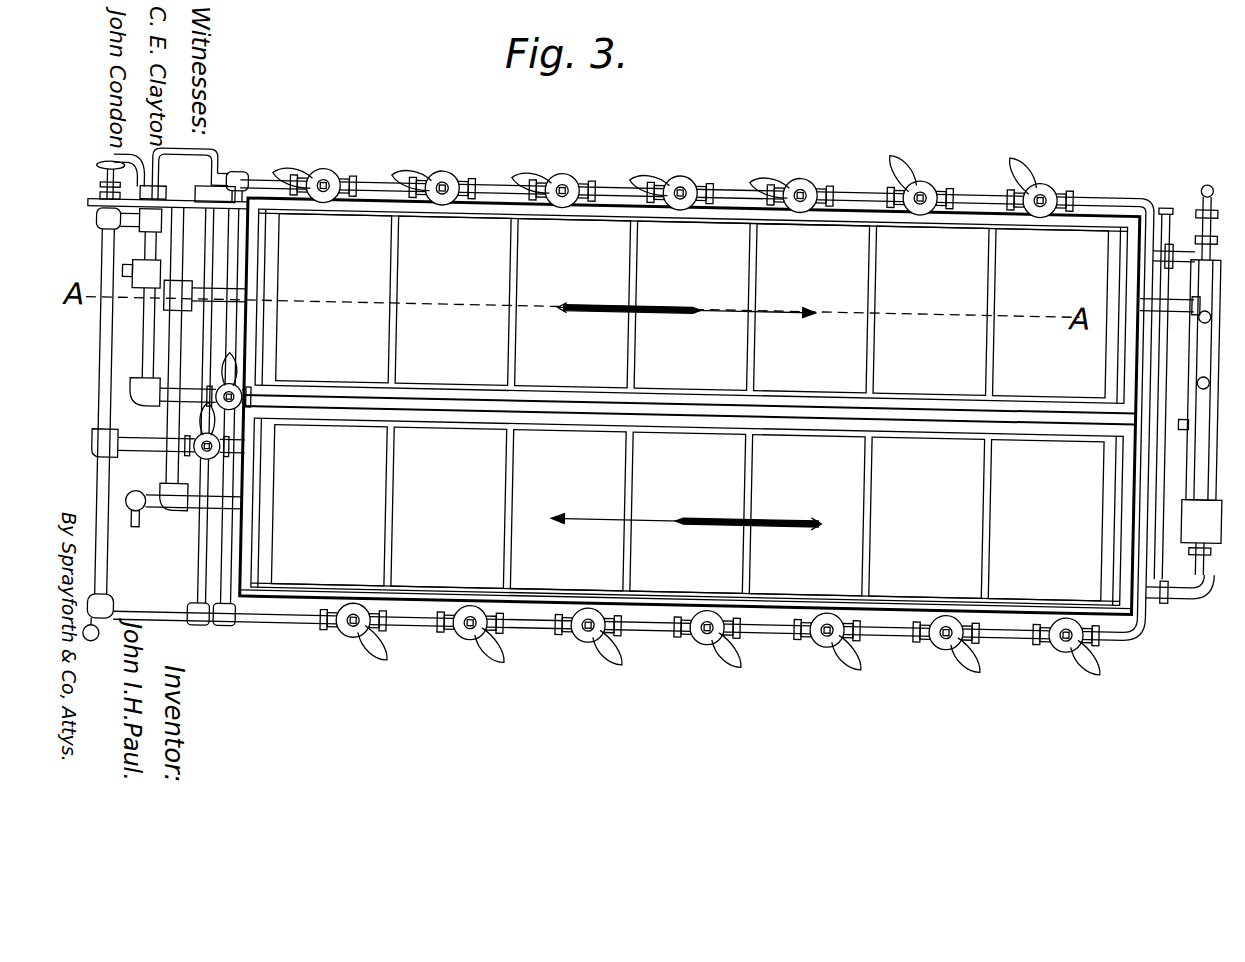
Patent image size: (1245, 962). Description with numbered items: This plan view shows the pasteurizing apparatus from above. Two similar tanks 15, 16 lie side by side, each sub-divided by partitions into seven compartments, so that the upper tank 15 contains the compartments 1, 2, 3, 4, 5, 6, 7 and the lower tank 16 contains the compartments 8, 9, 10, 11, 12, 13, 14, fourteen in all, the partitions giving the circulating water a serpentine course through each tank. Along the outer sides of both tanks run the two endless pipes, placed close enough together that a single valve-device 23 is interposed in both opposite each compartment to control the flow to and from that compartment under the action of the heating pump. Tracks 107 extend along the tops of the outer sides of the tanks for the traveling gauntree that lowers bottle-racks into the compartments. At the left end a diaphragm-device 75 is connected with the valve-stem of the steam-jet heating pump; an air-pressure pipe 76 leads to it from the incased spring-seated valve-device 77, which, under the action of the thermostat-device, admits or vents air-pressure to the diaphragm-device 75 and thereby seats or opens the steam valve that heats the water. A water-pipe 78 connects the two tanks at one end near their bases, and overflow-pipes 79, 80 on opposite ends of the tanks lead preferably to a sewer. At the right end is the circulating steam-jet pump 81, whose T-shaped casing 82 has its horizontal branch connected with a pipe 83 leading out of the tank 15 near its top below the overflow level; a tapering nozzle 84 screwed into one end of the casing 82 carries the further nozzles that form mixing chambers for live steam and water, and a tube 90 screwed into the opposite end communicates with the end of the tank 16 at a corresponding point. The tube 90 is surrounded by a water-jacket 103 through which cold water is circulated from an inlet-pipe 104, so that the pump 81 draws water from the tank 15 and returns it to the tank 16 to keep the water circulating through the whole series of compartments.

The compartment 1 is at (334, 298).
The compartment 2 is at (453, 300).
The compartment 3 is at (573, 303).
The compartment 4 is at (692, 305).
The compartment 5 is at (812, 308).
The compartment 6 is at (931, 310).
The compartment 7 is at (1051, 313).
The compartment 8 is at (1046, 520).
The compartment 9 is at (927, 517).
The compartment 10 is at (807, 515).
The compartment 11 is at (688, 512).
The compartment 12 is at (568, 510).
The compartment 13 is at (449, 507).
The compartment 14 is at (329, 505).
The tank 15 is at (1093, 211).
The tank 16 is at (1117, 597).
The valve-device 23 is at (327, 168).
The diaphragm-device 75 is at (100, 166).
The air-pressure pipe 76 is at (140, 164).
The incased spring-seated valve-device 77 is at (203, 188).
The water-pipe 78 is at (178, 364).
The overflow-pipe 79 is at (183, 510).
The overflow-pipe 80 is at (1169, 298).
The steam-jet pump 81 is at (1191, 472).
The T-shaped casing 82 is at (1201, 244).
The pipe 83 is at (1178, 227).
The tapering nozzle 84 is at (1213, 247).
The tube 90 is at (1202, 265).
The water-jacket 103 is at (1196, 460).
The inlet-pipe 104 is at (1199, 345).
The tracks 107 is at (1061, 205).